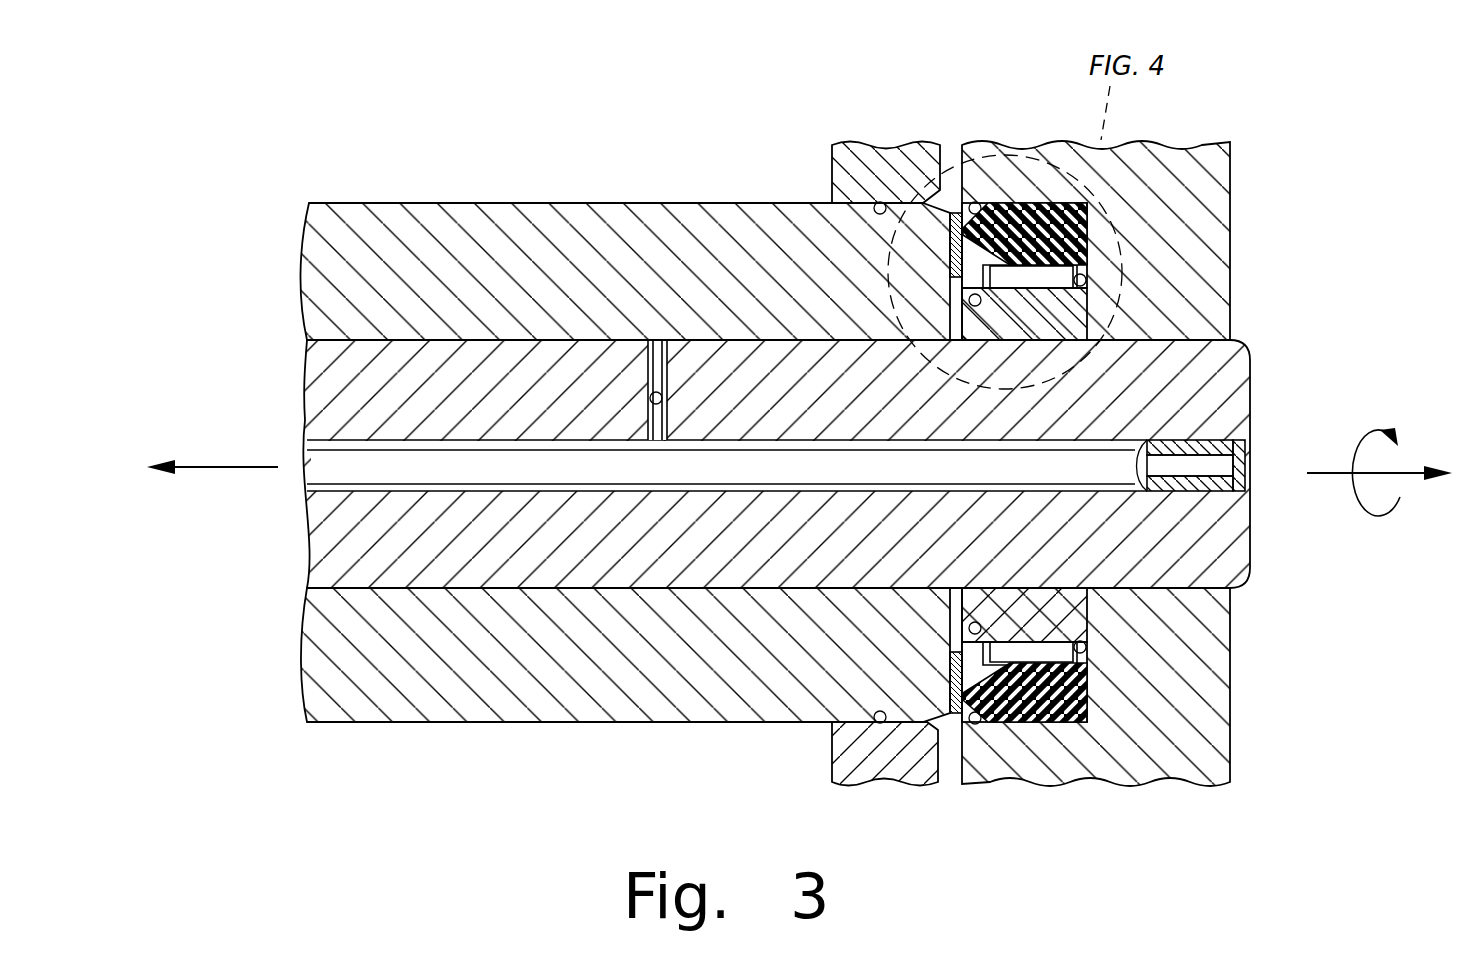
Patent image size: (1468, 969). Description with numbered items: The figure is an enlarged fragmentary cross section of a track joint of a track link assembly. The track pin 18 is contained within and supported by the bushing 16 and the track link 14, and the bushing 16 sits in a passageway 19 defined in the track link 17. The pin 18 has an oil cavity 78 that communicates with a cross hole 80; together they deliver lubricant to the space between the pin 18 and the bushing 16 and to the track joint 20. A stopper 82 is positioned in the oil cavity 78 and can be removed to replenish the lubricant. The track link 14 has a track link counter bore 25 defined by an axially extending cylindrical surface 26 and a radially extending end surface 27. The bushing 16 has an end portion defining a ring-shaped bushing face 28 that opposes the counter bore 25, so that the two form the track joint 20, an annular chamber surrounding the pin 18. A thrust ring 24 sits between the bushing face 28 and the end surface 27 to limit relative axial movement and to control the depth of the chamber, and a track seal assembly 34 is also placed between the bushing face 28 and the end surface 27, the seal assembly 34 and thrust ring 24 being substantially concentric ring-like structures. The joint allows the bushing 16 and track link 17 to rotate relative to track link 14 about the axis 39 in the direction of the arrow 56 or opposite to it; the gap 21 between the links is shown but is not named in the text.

The track link 14 is at (1214, 143).
The bushing 16 is at (570, 203).
The track link 17 is at (838, 142).
The track pin 18 is at (1238, 524).
The passageway 19 is at (870, 152).
The track joint 20 is at (1148, 276).
The gap 21 is at (949, 124).
The thrust ring 24 is at (1078, 300).
The track link counter bore 25 is at (1088, 266).
The axially extending cylindrical surface 26 is at (958, 212).
The radially extending end surface 27 is at (1088, 207).
The bushing face 28 is at (958, 328).
The track seal assembly 34 is at (1049, 182).
The axis 39 is at (222, 467).
The arrow 56 is at (1384, 516).
The oil cavity 78 is at (313, 478).
The cross hole 80 is at (662, 406).
The stopper 82 is at (1245, 456).